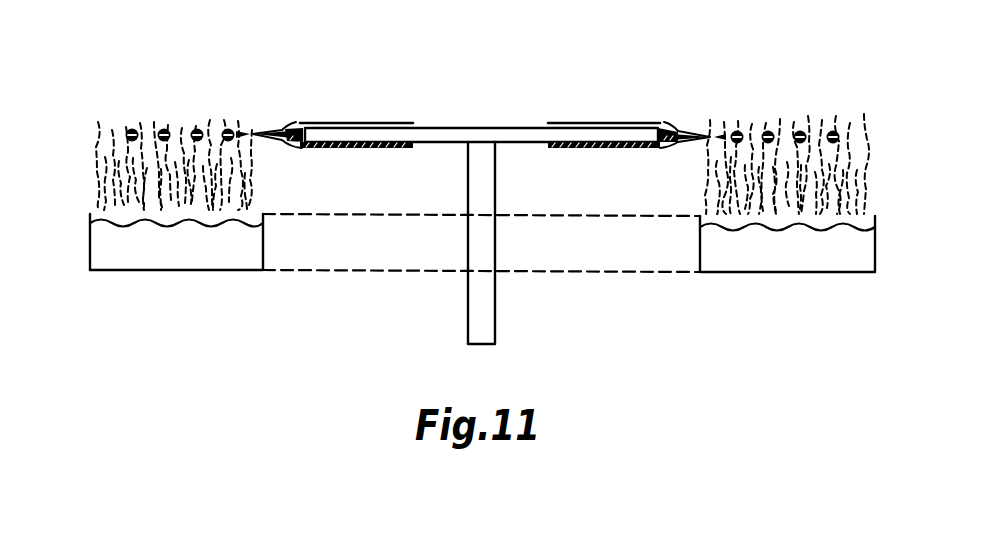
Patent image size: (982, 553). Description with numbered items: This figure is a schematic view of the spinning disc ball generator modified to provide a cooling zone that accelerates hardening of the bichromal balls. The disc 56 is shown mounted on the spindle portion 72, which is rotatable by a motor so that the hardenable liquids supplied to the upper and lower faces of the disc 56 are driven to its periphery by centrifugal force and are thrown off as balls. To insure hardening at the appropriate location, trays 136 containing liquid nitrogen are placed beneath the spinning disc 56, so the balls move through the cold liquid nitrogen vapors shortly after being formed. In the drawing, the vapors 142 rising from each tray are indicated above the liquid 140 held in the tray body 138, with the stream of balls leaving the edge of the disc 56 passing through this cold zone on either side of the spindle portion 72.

The trays 136 is at (226, 85).
The spray of cleaning fluid 142 is at (98, 156).
The collected cleaning fluid 140 is at (178, 248).
The collection tray 138 is at (205, 270).
The disc 56 is at (413, 136).
The spindle portion 72 is at (480, 326).